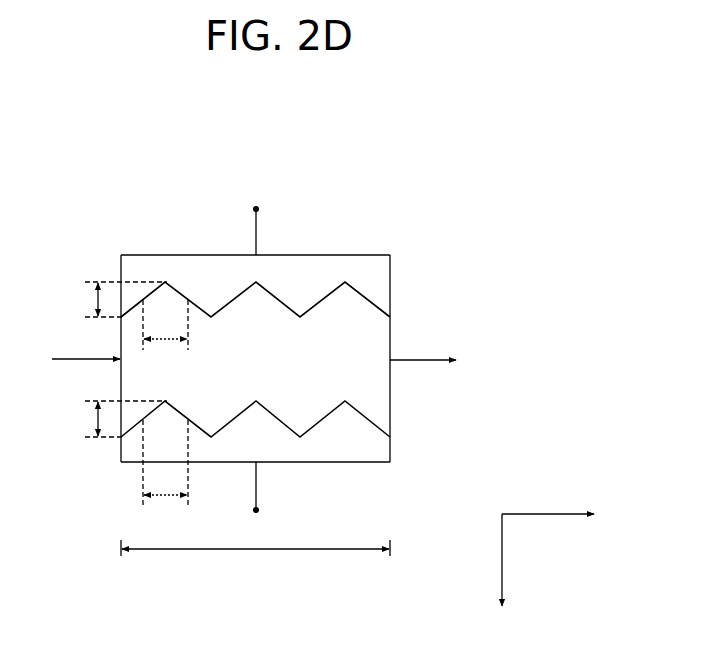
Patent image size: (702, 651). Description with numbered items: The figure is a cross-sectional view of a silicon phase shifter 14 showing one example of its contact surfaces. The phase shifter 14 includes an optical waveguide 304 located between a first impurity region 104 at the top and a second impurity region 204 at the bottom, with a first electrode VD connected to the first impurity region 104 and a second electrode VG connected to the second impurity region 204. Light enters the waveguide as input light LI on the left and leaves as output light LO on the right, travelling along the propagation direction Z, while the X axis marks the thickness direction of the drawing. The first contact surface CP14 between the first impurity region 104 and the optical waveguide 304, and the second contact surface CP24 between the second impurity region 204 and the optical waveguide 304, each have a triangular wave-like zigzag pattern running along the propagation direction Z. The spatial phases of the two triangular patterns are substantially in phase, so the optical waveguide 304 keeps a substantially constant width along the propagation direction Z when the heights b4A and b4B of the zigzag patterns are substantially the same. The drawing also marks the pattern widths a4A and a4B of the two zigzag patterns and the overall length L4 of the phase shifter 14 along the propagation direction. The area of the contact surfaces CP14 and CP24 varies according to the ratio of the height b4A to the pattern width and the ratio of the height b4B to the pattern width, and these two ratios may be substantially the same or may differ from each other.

The silicon phase shifter 14 is at (268, 127).
The first impurity region 104 is at (323, 260).
The second impurity region 204 is at (377, 450).
The optical waveguide 304 is at (378, 337).
The first contact surface CP14 is at (360, 297).
The second contact surface CP24 is at (372, 402).
The first electrode VD is at (260, 218).
The second electrode VG is at (258, 500).
The input light LI is at (72, 359).
The output light LO is at (438, 360).
The length of modulator L4 is at (255, 559).
The pitch width of first pattern a4A is at (165, 334).
The pitch width of second pattern a4B is at (165, 472).
The height of first zigzag pattern b4A is at (110, 299).
The height of second zigzag pattern b4B is at (110, 419).
The X axis X is at (501, 575).
The propagation direction Z is at (558, 515).